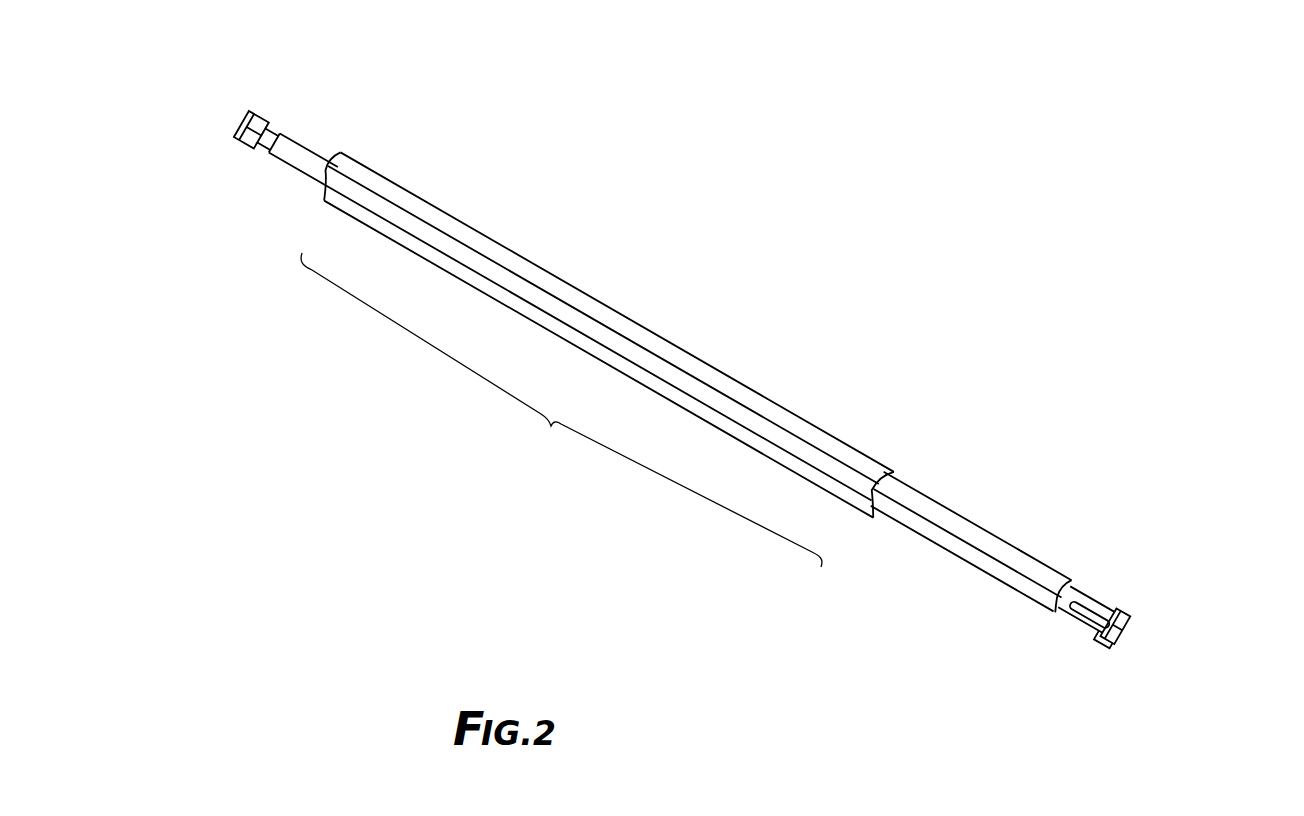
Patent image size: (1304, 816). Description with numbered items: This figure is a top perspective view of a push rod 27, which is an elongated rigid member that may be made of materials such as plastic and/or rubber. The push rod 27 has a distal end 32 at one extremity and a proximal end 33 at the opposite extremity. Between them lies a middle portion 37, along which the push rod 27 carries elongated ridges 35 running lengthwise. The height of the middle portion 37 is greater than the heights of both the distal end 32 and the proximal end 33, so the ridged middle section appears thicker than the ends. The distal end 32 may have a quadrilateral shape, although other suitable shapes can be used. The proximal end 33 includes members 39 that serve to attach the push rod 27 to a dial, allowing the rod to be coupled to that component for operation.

The push rod 27 is at (664, 258).
The distal end 32 is at (280, 113).
The proximal end 33 is at (1152, 630).
The elongated ridges 35 is at (443, 217).
The middle portion 37 is at (551, 426).
The members 39 is at (1122, 615).